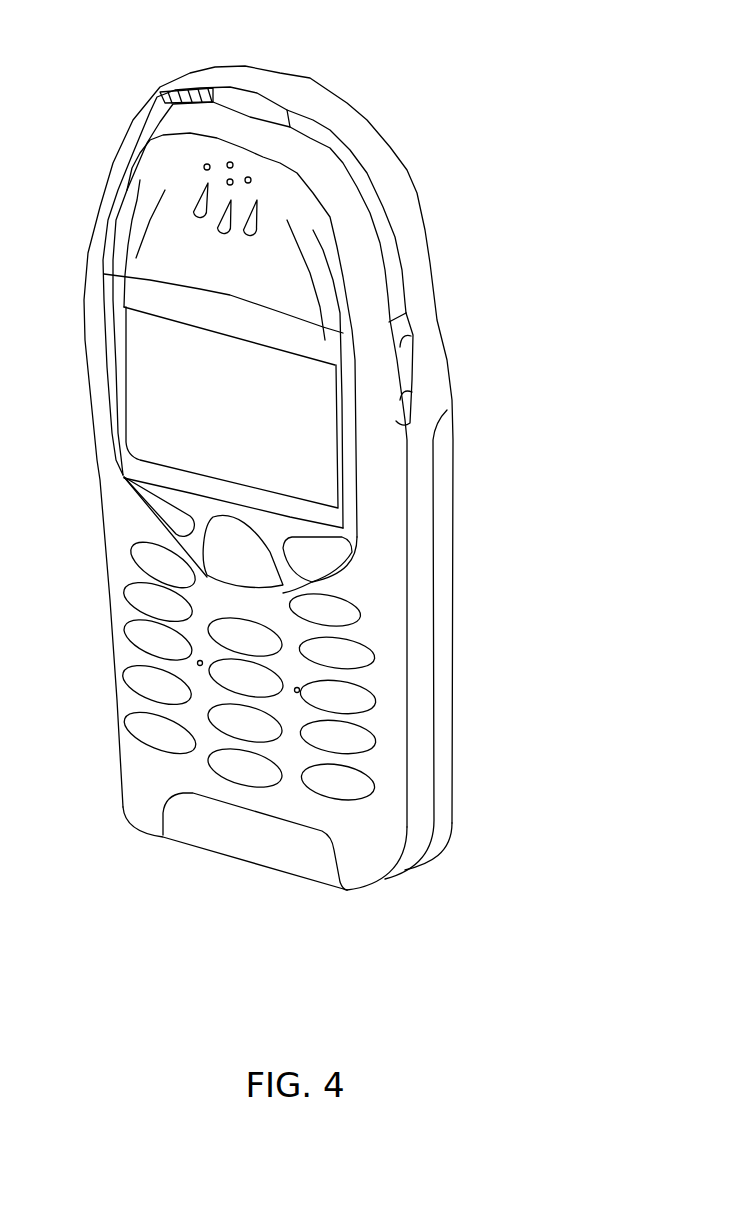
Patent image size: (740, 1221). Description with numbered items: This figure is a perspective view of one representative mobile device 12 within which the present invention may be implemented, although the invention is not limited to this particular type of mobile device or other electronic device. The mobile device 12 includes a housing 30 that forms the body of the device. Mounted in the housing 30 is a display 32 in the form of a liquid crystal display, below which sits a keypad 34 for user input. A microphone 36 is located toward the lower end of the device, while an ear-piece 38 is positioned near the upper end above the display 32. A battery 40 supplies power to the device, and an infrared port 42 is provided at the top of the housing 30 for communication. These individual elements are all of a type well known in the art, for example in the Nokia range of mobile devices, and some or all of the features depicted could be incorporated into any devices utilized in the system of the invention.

The mobile device 12 is at (390, 72).
The housing 30 is at (413, 235).
The display 32 is at (312, 450).
The keypad 34 is at (337, 787).
The microphone 36 is at (187, 830).
The ear-piece 38 is at (148, 187).
The battery 40 is at (443, 770).
The infrared port 42 is at (250, 103).